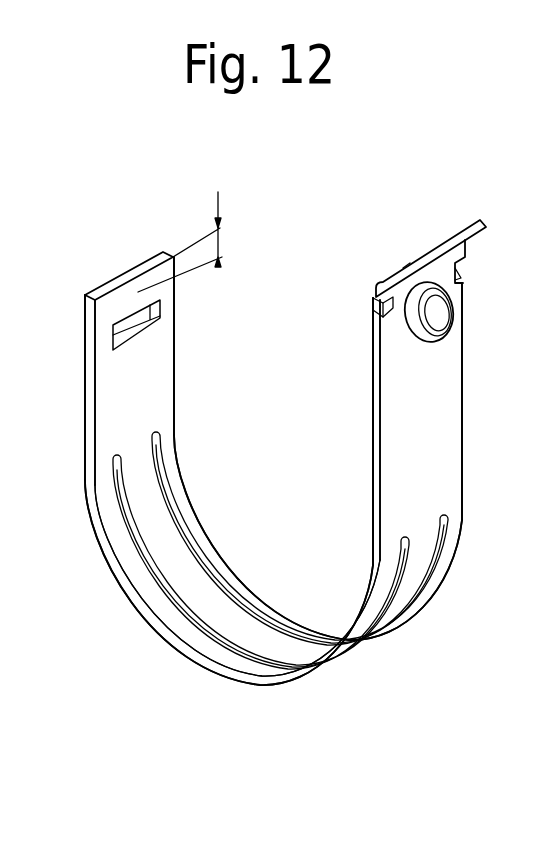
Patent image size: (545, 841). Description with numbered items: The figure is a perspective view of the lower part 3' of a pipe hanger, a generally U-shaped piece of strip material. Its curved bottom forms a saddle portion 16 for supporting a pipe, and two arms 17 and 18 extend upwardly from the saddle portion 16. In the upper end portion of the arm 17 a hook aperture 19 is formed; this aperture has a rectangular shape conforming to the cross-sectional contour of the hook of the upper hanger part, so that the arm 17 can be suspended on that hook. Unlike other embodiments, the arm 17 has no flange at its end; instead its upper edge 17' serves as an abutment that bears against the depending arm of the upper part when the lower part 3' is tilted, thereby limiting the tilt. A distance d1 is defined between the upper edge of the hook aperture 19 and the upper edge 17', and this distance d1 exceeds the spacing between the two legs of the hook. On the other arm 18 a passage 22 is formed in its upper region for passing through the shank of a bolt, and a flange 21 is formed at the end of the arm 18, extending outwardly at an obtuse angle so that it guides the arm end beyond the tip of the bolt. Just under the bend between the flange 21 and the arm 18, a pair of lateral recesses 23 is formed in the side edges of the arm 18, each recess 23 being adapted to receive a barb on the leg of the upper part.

The lower part 3' is at (273, 402).
The saddle portion 16 is at (234, 670).
The arm 17 is at (106, 371).
The upper edge 17' is at (129, 259).
The arm 18 is at (412, 458).
The hook aperture 19 is at (140, 317).
The flange 21 is at (423, 260).
The passage 22 is at (432, 313).
The lateral recess 23 is at (462, 276).
The distance d1 is at (196, 242).